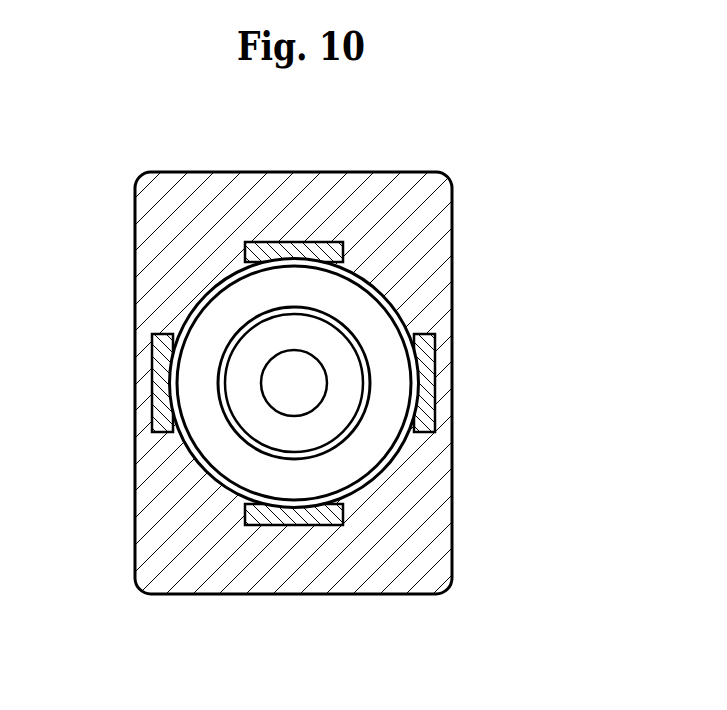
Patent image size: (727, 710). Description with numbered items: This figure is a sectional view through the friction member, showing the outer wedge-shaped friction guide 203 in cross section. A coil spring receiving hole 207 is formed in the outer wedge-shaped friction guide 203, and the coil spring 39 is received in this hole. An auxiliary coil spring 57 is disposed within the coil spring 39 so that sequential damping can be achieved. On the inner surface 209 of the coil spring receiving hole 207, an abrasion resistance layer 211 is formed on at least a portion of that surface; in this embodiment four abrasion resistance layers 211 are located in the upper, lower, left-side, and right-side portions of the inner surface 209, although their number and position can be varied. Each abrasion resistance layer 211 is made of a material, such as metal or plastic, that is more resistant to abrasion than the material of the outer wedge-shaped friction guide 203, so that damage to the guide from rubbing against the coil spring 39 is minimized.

The outer wedge-shaped friction guide 203 is at (422, 153).
The coil spring receiving hole 207 is at (392, 295).
The inner surface 209 is at (373, 261).
The abrasion resistance layer 211 is at (300, 242).
The auxiliary coil spring 57 is at (262, 342).
The coil spring 39 is at (368, 435).